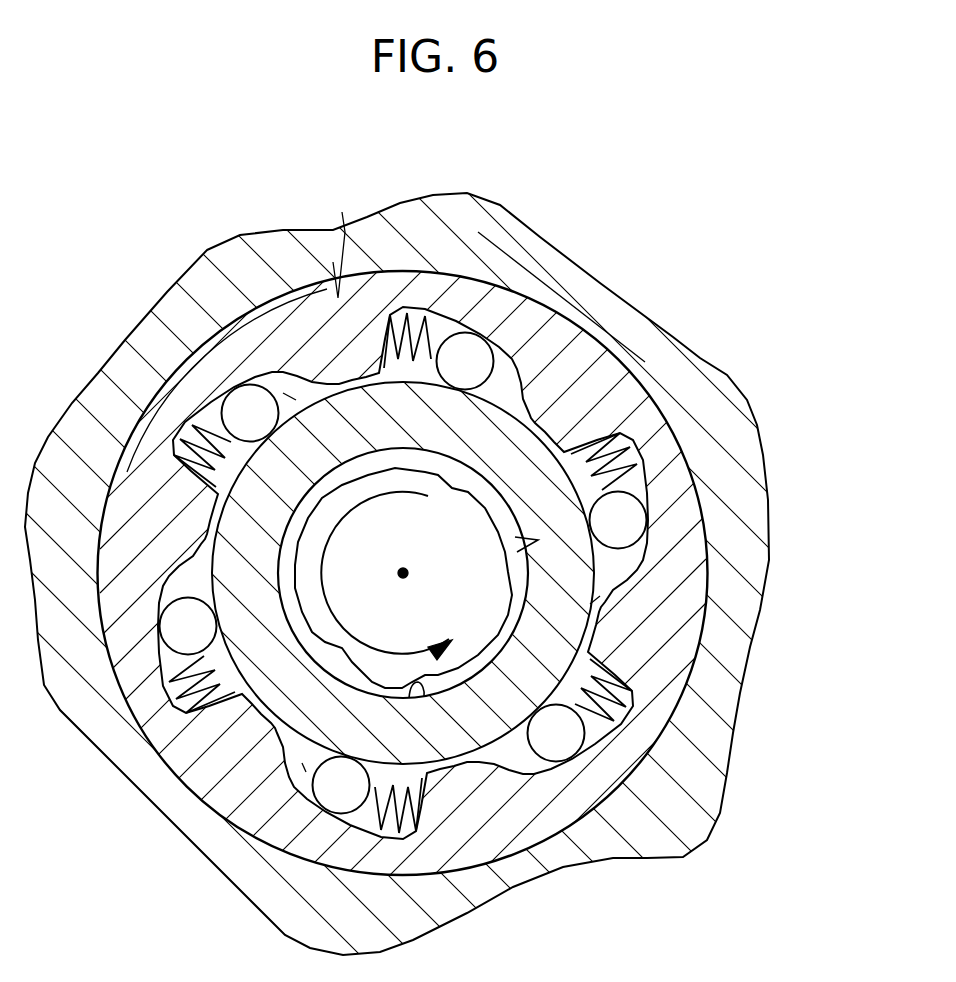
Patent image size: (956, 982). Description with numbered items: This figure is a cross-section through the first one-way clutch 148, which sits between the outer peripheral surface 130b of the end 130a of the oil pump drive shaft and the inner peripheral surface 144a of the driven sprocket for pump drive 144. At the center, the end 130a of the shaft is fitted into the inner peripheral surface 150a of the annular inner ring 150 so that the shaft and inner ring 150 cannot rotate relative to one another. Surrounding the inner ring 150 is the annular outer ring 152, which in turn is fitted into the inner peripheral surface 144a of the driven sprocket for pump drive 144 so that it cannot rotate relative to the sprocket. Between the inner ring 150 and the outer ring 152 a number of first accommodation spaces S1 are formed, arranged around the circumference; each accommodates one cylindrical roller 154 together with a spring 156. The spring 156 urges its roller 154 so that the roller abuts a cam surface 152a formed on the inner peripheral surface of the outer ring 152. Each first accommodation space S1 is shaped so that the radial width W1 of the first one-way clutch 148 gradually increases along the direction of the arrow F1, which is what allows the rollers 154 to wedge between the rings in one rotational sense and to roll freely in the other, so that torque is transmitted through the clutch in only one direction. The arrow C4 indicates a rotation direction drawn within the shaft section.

The driven sprocket for pump drive 144 is at (487, 243).
The inner peripheral surface of the driven sprocket for pump drive 144a is at (337, 239).
The first one-way clutch 148 is at (605, 317).
The inner ring 150 is at (598, 628).
The inner peripheral surface of the inner ring 150a is at (424, 700).
The outer ring 152 is at (233, 305).
The cam surface 152a is at (232, 412).
The roller 154 is at (248, 424).
The spring 156 is at (195, 452).
The end of the oil pump drive shaft 130a is at (500, 518).
The outer peripheral surface of the end of the oil pump drive shaft 130b is at (530, 542).
The arrow F1 is at (362, 512).
The rotation direction C4 is at (404, 580).
The first accommodation space S1 is at (288, 390).
The radial width W1 is at (497, 391).